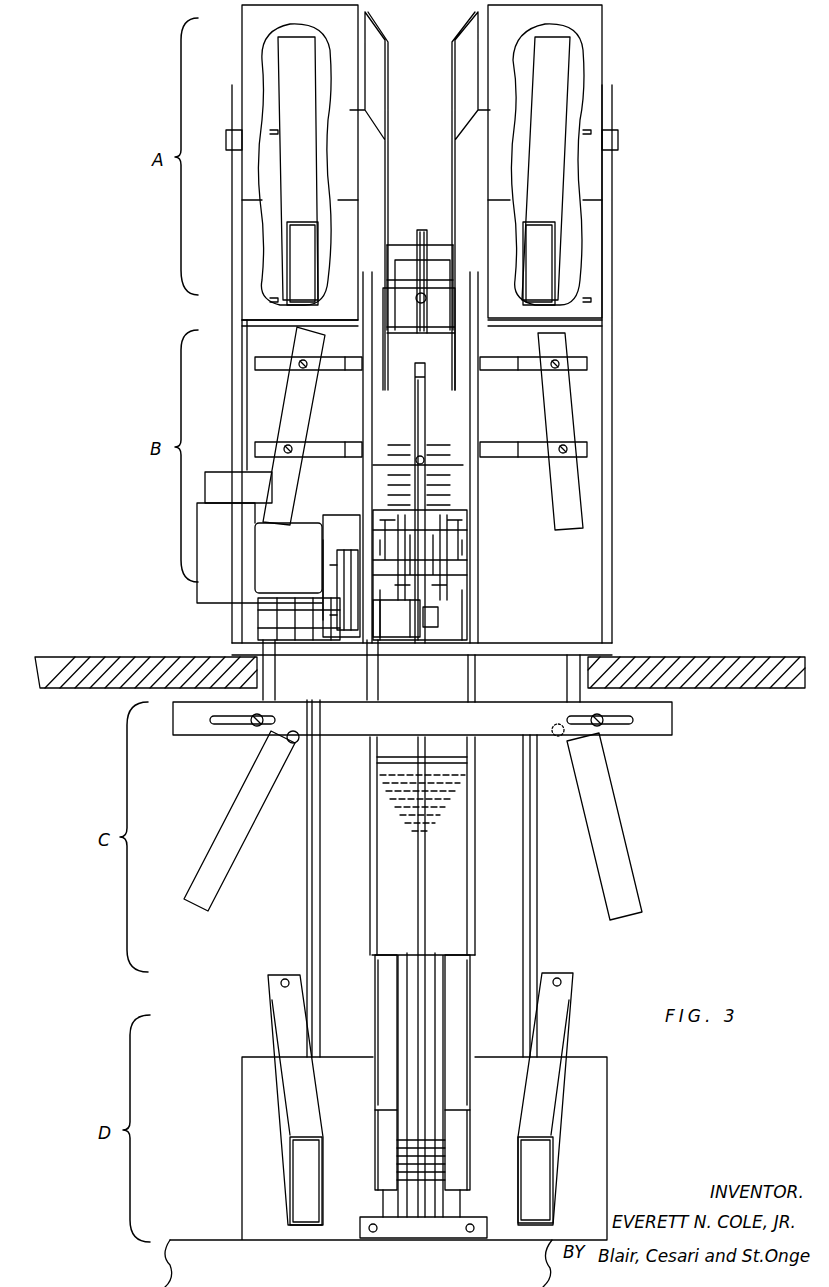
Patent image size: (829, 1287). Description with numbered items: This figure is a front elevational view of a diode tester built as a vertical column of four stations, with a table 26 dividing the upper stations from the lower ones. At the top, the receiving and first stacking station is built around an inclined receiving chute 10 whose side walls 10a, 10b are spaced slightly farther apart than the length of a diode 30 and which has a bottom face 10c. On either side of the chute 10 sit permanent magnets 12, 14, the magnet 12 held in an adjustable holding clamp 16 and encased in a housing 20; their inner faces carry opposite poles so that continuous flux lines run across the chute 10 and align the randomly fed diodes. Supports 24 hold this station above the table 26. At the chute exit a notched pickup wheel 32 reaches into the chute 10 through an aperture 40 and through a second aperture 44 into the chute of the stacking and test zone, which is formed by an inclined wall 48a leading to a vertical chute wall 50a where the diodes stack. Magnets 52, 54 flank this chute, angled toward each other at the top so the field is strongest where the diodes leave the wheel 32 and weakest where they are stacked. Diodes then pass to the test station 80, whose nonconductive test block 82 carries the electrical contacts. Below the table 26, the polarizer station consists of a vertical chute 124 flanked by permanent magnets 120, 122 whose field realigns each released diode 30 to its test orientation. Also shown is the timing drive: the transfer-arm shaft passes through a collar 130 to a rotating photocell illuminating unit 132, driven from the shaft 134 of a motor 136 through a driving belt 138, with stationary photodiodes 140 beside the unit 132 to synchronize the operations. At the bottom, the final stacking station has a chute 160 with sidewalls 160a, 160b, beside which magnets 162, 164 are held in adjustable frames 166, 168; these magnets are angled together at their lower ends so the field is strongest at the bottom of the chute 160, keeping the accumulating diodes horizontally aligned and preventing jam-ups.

The inclined receiving chute 10 is at (428, 14).
The side wall 10a is at (388, 83).
The side wall 10b is at (457, 118).
The bottom face 10c is at (420, 205).
The permanent magnet 12 is at (543, 250).
The permanent magnet 14 is at (300, 245).
The adjustable holding clamp 16 is at (552, 90).
The housing 20 is at (597, 46).
The supports 24 is at (237, 395).
The table 26 is at (710, 657).
The diode 30 is at (398, 243).
The pickup wheel 32 is at (421, 303).
The aperture 40 is at (430, 253).
The aperture 44 is at (425, 300).
The inclined wall 48a is at (403, 360).
The wall 50a is at (425, 425).
The magnet 52 is at (560, 497).
The magnet 54 is at (285, 491).
The test station 80 is at (498, 614).
The test block 82 is at (432, 640).
The permanent magnet 120 is at (610, 838).
The permanent magnet 122 is at (230, 830).
The vertical chute 124 is at (388, 887).
The collar 130 is at (385, 640).
The photocell illuminating unit 132 is at (303, 640).
The shaft 134 is at (337, 560).
The motor 136 is at (288, 558).
The driving belt 138 is at (350, 590).
The photodiodes 140 is at (260, 625).
The chute 160 is at (425, 1047).
The sidewall 160a is at (380, 980).
The sidewall 160b is at (465, 985).
The magnet 162 is at (535, 1203).
The magnet 164 is at (302, 1163).
The adjustable frame 166 is at (560, 1013).
The adjustable frame 168 is at (287, 1020).